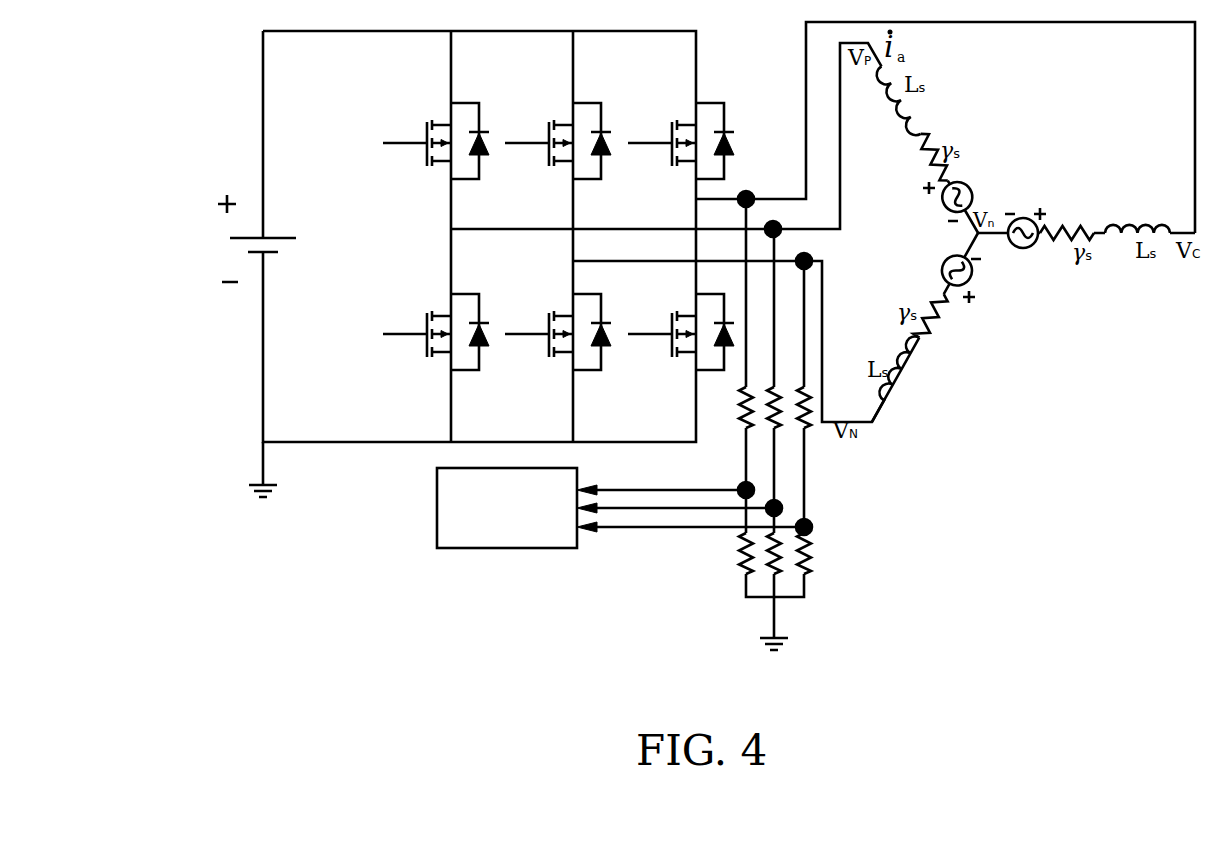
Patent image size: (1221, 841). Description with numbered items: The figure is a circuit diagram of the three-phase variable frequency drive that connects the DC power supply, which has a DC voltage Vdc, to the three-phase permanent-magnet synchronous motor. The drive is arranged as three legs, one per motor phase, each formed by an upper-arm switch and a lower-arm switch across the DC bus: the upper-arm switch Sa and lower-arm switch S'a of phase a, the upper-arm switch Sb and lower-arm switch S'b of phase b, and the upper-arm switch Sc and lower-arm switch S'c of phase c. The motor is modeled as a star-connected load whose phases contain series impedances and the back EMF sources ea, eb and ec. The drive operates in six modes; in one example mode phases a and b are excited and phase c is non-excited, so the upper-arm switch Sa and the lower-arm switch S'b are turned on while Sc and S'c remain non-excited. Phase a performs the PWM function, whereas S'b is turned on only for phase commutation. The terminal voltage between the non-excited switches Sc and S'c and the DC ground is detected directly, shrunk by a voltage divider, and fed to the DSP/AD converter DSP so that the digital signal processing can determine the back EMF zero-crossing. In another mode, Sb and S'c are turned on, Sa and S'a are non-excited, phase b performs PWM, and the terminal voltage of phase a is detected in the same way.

The upper-arm switch of phase a Sa is at (436, 141).
The upper-arm switch of phase b Sb is at (558, 141).
The upper-arm switch of phase c Sc is at (681, 141).
The lower-arm switch of phase a S'a is at (436, 332).
The lower-arm switch of phase b S'b is at (558, 332).
The lower-arm switch of phase c S'c is at (681, 332).
The DC voltage Vdc is at (245, 346).
The DSP/AD converter DSP is at (507, 508).
The back EMF of phase a ea is at (930, 150).
The back EMF of phase b eb is at (925, 328).
The back EMF of phase c ec is at (1086, 245).